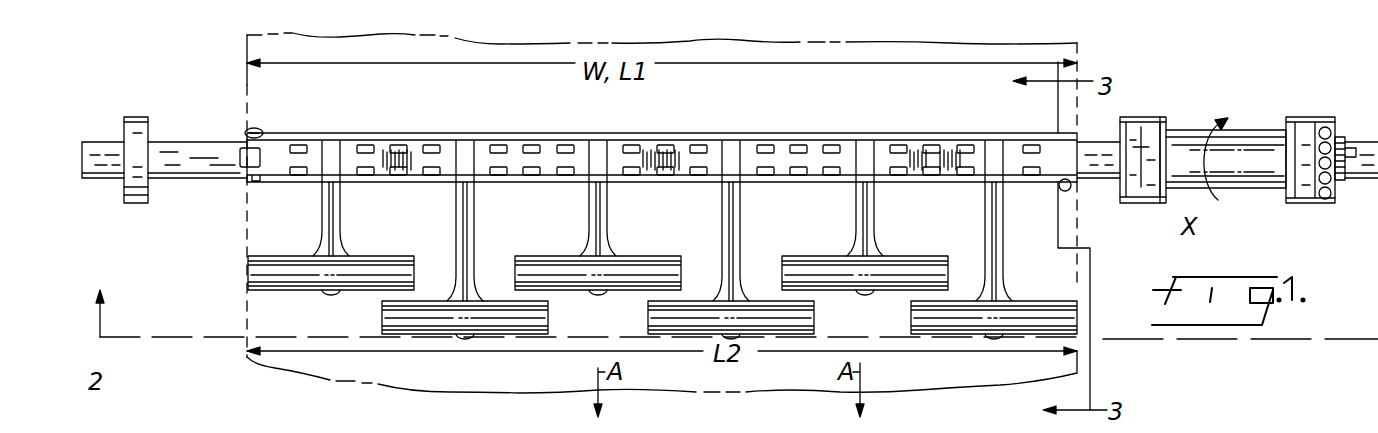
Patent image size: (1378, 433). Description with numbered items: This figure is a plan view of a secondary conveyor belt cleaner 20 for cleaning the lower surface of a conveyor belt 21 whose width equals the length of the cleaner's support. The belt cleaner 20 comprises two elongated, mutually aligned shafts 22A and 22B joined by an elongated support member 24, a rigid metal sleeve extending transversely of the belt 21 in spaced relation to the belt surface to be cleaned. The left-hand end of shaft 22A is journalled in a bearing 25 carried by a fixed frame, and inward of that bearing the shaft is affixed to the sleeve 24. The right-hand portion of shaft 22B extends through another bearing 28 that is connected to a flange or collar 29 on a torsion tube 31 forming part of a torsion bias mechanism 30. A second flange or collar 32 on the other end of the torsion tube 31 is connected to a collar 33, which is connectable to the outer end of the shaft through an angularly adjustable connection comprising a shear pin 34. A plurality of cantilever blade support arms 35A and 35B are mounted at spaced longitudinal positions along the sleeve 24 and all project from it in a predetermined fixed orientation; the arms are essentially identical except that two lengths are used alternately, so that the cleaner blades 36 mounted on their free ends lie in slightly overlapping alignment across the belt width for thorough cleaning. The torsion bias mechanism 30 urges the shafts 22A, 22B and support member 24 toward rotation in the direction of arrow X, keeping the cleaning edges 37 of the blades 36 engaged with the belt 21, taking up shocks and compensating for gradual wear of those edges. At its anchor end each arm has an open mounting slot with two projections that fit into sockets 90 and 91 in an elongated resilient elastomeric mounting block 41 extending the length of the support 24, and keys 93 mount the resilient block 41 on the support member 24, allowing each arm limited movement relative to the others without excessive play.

The secondary conveyor belt cleaner 20 is at (562, 370).
The conveyor belt 21 is at (957, 387).
The shaft 22A is at (190, 141).
The shaft 22B is at (1101, 176).
The support member 24 is at (788, 133).
The bearing 25 is at (136, 204).
The bearing 28 is at (1131, 117).
The flange or collar 29 is at (1151, 118).
The torsion bias mechanism 30 is at (1262, 118).
The torsion tube 31 is at (1254, 183).
The flange or collar 32 is at (1308, 117).
The collar 33 is at (1325, 203).
The shear pin 34 is at (1348, 153).
The cantilever blade support arm 35A is at (722, 216).
The cantilever blade support arm 35B is at (589, 233).
The cleaner blade 36 is at (912, 318).
The cleaning edge 37 is at (957, 300).
The resilient mounting block 41 is at (383, 168).
The socket 90 is at (563, 145).
The socket 91 is at (563, 176).
The key 93 is at (258, 128).